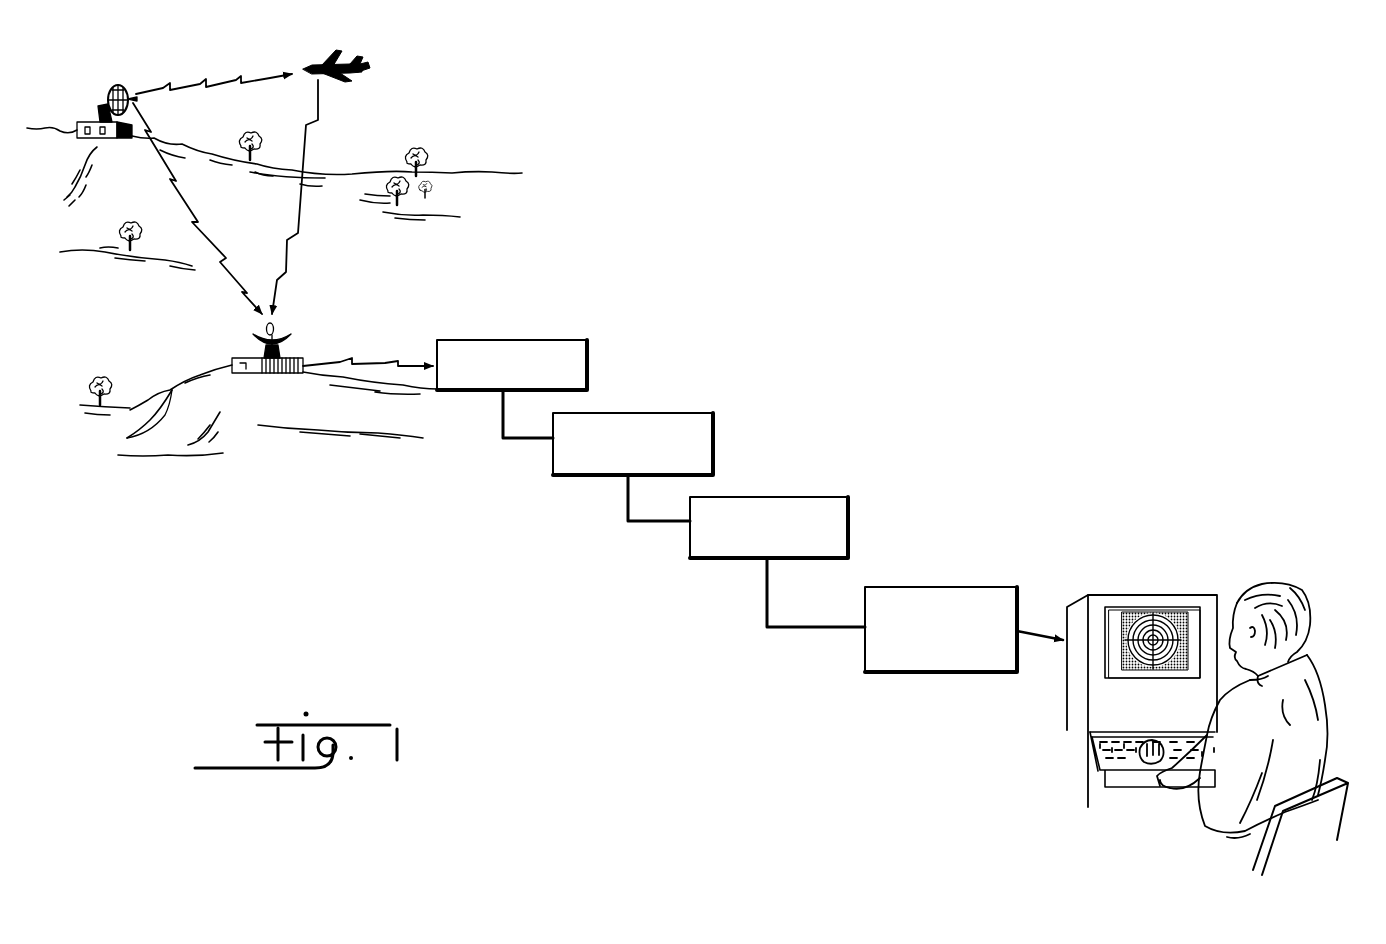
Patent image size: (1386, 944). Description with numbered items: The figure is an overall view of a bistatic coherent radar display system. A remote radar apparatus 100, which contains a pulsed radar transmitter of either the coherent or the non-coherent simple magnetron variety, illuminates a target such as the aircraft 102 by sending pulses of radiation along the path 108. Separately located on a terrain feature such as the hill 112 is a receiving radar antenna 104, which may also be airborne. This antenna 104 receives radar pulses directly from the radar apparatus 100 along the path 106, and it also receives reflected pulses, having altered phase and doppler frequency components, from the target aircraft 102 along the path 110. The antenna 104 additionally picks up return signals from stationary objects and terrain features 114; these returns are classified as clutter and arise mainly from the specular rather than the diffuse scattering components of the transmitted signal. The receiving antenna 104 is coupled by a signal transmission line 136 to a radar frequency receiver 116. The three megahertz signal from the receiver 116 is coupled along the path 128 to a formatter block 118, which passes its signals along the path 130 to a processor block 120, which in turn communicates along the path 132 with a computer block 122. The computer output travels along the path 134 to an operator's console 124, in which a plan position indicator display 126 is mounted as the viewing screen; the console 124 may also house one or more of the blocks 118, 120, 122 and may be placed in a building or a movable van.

The remote radar apparatus 100 is at (125, 88).
The target aircraft 102 is at (362, 71).
The receiving radar antenna 104 is at (291, 340).
The path 106 is at (227, 283).
The path 108 is at (222, 77).
The path 110 is at (290, 268).
The hill 112 is at (131, 420).
The terrain features 114 is at (323, 178).
The radar frequency receiver 116 is at (572, 338).
The formatter block 118 is at (660, 412).
The processor block 120 is at (780, 496).
The computer block 122 is at (947, 586).
The operator's console 124 is at (1097, 594).
The plan position indicator (PPI) display 126 is at (1170, 612).
The path 128 is at (503, 430).
The path 130 is at (628, 497).
The path 132 is at (818, 628).
The path 134 is at (1042, 645).
The signal transmission line 136 is at (380, 362).